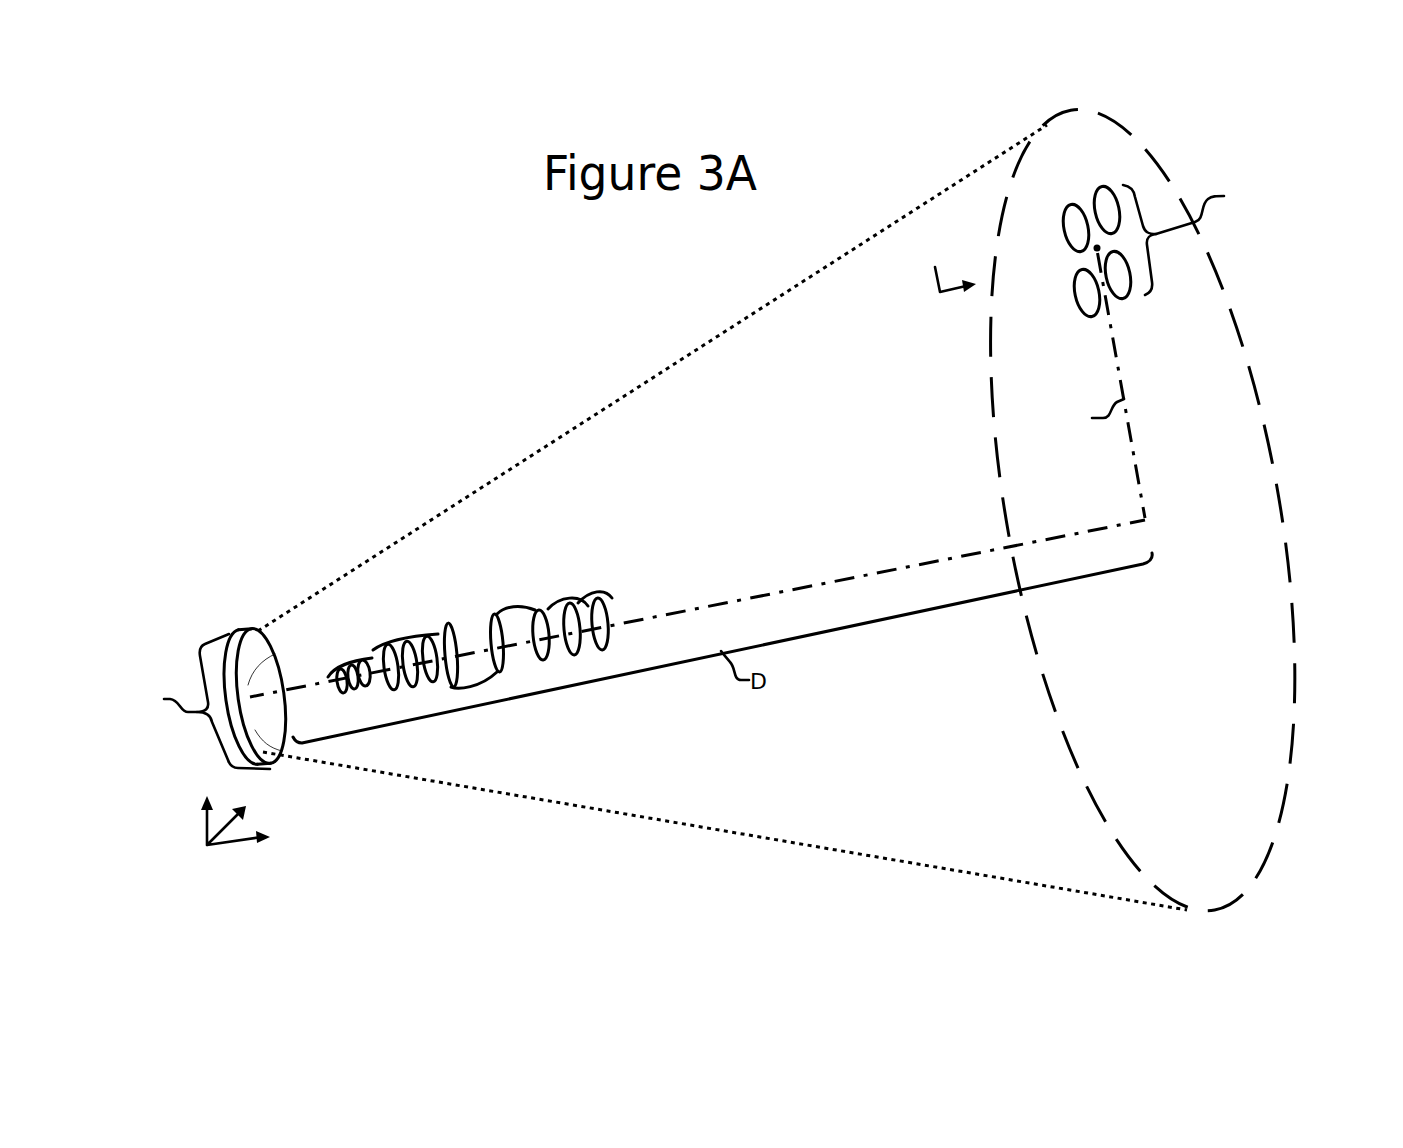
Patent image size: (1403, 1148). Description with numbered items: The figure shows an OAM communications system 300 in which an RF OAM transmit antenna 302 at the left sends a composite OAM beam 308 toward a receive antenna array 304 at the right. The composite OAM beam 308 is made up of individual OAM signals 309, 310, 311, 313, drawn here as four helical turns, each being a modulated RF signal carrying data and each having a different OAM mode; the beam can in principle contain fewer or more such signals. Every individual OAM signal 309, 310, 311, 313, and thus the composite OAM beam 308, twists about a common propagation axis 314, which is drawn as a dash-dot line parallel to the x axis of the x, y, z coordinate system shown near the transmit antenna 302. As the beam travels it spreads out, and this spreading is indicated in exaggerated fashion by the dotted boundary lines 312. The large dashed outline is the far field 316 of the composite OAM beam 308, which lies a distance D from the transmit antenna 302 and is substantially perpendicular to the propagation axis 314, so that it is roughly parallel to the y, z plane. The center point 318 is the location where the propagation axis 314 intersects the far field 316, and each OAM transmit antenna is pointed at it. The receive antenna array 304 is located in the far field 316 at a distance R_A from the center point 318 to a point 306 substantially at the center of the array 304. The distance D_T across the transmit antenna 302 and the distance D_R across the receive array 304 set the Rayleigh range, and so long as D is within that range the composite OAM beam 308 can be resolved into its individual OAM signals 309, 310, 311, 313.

The OAM communications system 300 is at (427, 356).
The OAM transmit antenna 302 is at (256, 626).
The receive antenna array 304 is at (1086, 178).
The center point of the array 306 is at (1096, 249).
The composite OAM beam 308 is at (578, 566).
The individual OAM signal 309 is at (346, 668).
The individual OAM signal 310 is at (416, 640).
The individual OAM signal 311 is at (447, 624).
The spreading of the composite OAM beam 312 is at (718, 338).
The individual OAM signal 313 is at (620, 628).
The propagation axis 314 is at (935, 560).
The far field 316 is at (993, 410).
The center point 318 is at (1146, 512).